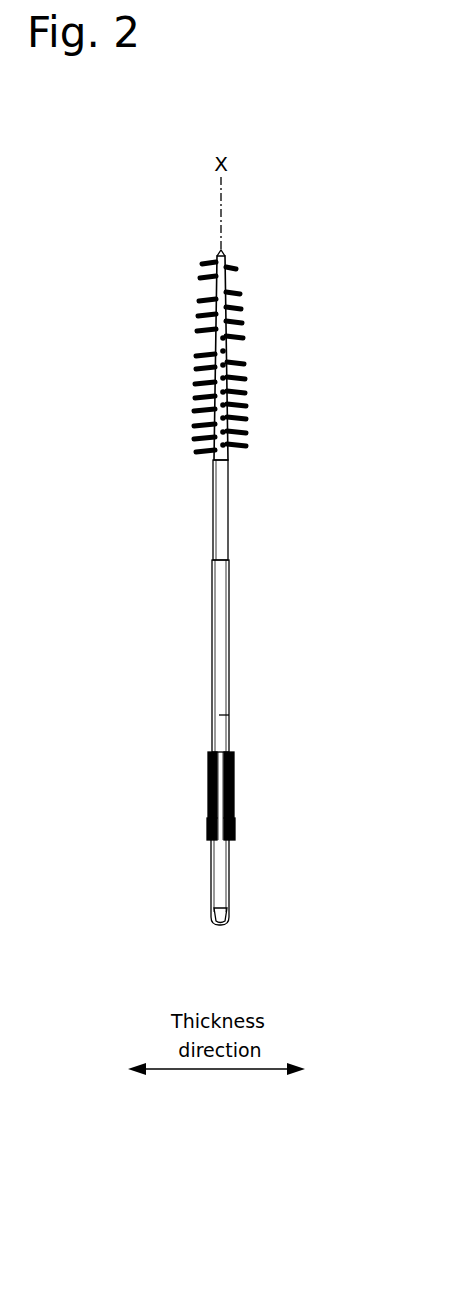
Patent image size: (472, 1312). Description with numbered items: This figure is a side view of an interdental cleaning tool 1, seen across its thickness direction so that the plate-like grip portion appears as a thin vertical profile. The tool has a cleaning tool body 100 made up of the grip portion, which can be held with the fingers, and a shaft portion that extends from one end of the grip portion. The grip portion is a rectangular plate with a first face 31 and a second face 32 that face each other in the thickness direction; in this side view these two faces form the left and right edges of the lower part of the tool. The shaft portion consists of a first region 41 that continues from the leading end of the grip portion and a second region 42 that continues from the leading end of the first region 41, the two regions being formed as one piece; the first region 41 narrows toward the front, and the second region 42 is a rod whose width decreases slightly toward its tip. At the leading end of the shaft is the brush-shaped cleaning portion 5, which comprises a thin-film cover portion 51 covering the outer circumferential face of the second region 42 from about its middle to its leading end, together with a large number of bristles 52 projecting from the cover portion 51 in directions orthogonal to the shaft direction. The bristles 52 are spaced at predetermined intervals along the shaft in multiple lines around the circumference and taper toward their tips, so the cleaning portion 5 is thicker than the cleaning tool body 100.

The interdental cleaning tool 1 is at (145, 300).
The cleaning portion 5 is at (248, 343).
The cover portion 51 is at (212, 458).
The bristles 52 is at (202, 361).
The second region 42 is at (222, 527).
The first region 41 is at (222, 631).
The cleaning tool body 100 is at (158, 738).
The second face 32 is at (208, 852).
The first face 31 is at (228, 879).